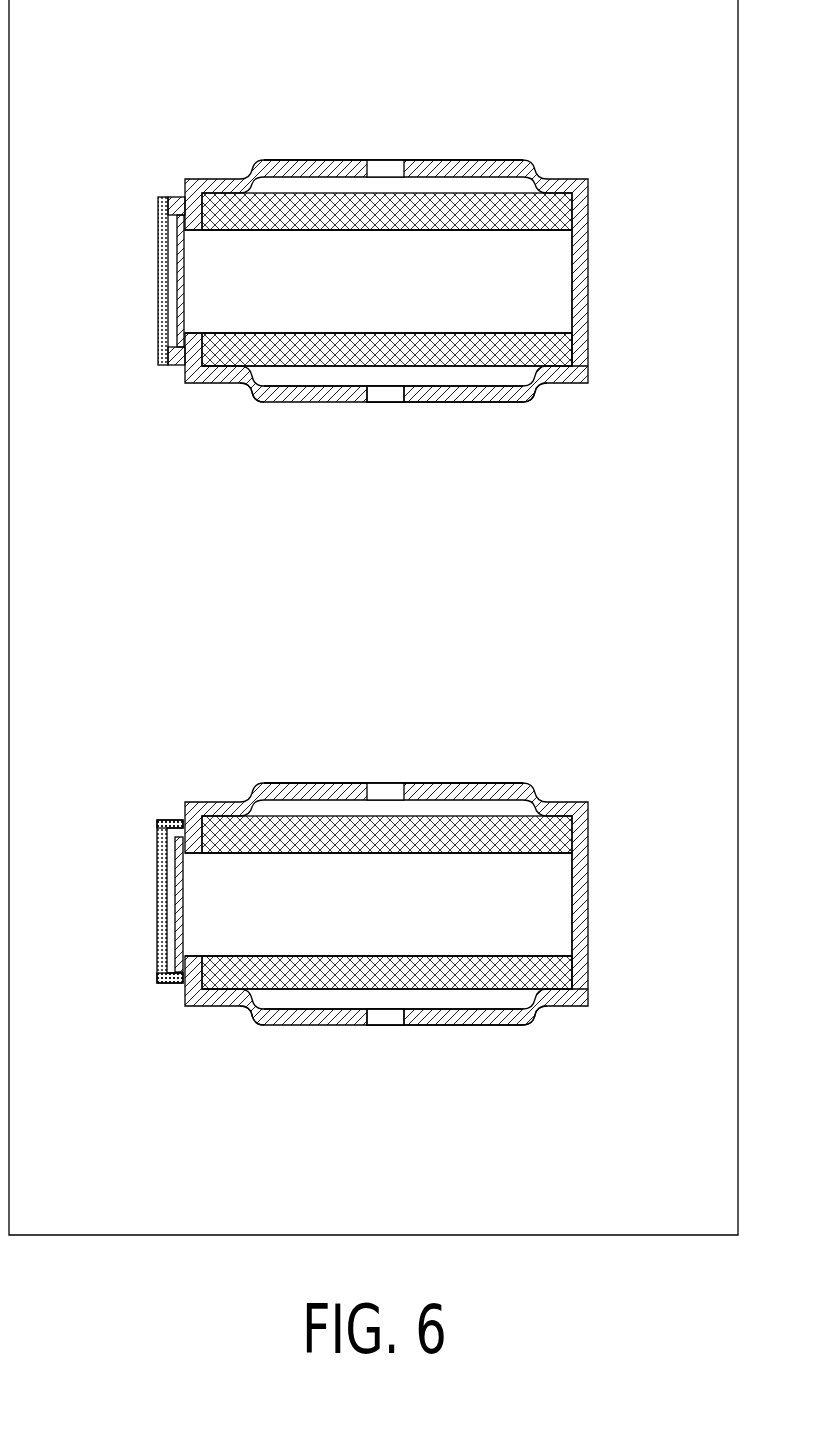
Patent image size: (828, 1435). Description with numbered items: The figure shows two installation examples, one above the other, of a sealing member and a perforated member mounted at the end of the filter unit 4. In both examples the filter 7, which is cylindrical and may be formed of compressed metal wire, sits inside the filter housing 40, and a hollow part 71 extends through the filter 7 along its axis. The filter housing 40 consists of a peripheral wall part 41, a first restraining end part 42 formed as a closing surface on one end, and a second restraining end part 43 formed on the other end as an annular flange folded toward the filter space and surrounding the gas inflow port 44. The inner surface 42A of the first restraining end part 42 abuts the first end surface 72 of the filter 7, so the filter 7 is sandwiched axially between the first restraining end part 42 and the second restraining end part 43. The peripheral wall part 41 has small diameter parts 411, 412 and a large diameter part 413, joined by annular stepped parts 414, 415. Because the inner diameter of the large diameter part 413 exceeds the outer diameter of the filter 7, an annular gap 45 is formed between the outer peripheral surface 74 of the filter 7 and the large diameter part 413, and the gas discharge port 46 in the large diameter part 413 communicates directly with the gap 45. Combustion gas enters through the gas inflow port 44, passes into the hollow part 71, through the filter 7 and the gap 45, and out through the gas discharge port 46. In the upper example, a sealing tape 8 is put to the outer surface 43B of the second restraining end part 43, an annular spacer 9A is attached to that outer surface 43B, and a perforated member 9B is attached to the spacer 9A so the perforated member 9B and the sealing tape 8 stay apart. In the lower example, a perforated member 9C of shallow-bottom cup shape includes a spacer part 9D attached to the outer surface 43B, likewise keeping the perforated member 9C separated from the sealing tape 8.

The filter unit 4 is at (557, 108).
The filter 7 is at (455, 200).
The sealing tape 8 is at (178, 258).
The spacer 9A is at (173, 197).
The perforated member 9B is at (160, 300).
The perforated member 9C is at (160, 922).
The spacer part 9D is at (182, 818).
The filter housing 40 is at (308, 155).
The peripheral wall part 41 is at (350, 160).
The first restraining end part 42 is at (589, 270).
The inner surface of the first restraining end part 42A is at (573, 305).
The second restraining end part 43 is at (183, 384).
The outer surface of the second restraining end part 43B is at (160, 343).
The gas inflow port 44 is at (213, 289).
The gap 45 is at (340, 388).
The gas discharge port 46 is at (398, 160).
The hollow part 71 is at (389, 299).
The first end surface 72 is at (585, 346).
The outer peripheral surface 74 is at (312, 386).
The small diameter part 411 is at (548, 386).
The small diameter part 412 is at (230, 385).
The large diameter part 413 is at (460, 403).
The annular stepped part 414 is at (497, 333).
The annular stepped part 415 is at (269, 230).